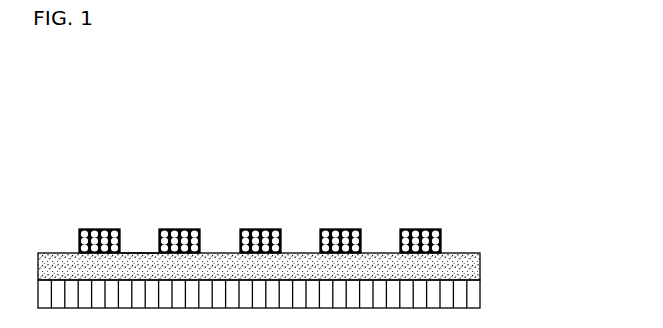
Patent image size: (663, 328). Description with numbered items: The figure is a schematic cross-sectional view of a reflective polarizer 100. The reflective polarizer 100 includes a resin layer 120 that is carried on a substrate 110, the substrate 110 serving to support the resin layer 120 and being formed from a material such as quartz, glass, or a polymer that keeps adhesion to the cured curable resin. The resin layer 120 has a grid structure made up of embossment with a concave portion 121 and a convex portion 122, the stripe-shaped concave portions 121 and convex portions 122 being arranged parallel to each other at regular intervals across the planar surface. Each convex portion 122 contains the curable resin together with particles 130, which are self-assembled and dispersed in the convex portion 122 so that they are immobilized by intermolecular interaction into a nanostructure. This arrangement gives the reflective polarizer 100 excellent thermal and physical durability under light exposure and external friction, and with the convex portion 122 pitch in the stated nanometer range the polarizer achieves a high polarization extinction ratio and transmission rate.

The reflective polarizer 100 is at (291, 152).
The substrate 110 is at (475, 292).
The resin layer 120 is at (475, 263).
The concave portion 121 is at (145, 243).
The convex portion 122 is at (180, 230).
The particles 130 is at (441, 236).